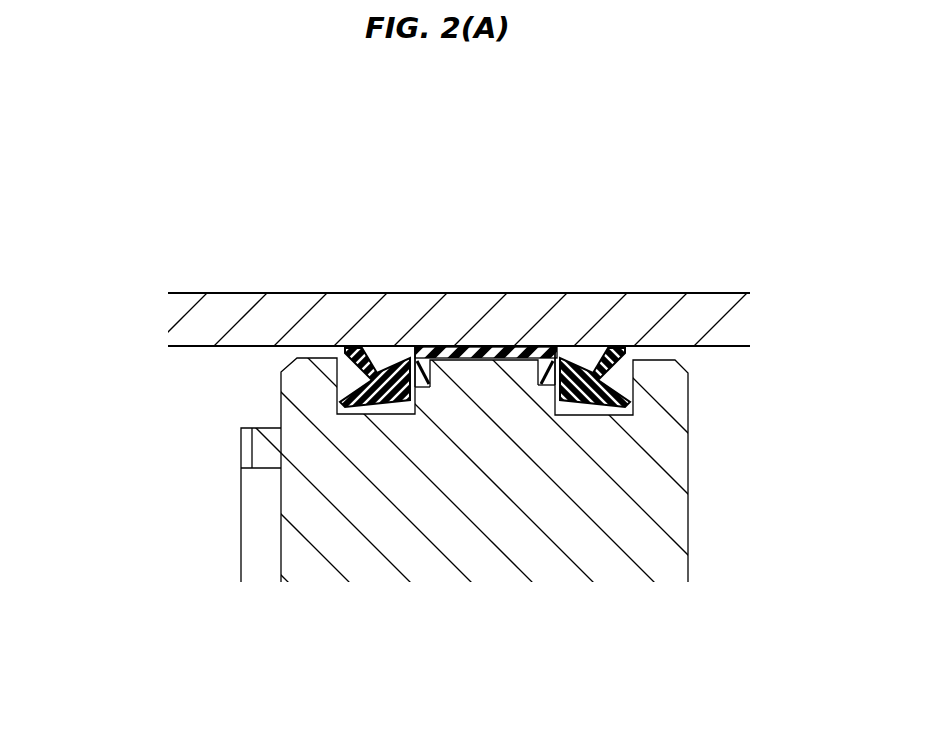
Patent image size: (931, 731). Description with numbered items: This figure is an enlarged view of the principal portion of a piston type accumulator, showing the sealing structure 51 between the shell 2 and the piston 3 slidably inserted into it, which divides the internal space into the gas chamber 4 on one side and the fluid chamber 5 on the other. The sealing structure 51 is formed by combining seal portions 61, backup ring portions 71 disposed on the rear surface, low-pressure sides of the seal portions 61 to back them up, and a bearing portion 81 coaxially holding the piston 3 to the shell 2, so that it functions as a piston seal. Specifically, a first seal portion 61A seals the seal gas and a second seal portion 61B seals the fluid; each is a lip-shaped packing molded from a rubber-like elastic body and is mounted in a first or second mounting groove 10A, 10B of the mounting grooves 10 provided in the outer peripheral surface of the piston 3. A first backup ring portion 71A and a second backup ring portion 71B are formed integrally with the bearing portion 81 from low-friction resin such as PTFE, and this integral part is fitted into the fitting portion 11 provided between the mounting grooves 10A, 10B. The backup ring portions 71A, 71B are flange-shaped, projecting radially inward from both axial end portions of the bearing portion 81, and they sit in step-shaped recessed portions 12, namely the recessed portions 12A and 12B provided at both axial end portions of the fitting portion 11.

The shell 2 is at (183, 320).
The piston 3 is at (295, 540).
The gas chamber 4 is at (121, 509).
The fluid chamber 5 is at (798, 509).
The mounting grooves 10 is at (475, 365).
The first mounting groove 10A is at (393, 414).
The second mounting groove 10B is at (581, 414).
The fitting portion 11 is at (483, 372).
The step-shaped recessed portions 12 is at (492, 300).
The step-shaped recessed portion 12A is at (419, 368).
The step-shaped recessed portion 12B is at (557, 365).
The sealing structure 51 is at (342, 343).
The seal portions 61 is at (496, 295).
The first seal portion 61A is at (393, 403).
The second seal portion 61B is at (584, 403).
The backup ring portions 71 is at (482, 510).
The first backup ring portion 71A is at (421, 388).
The second backup ring portion 71B is at (548, 384).
The bearing portion 81 is at (485, 350).